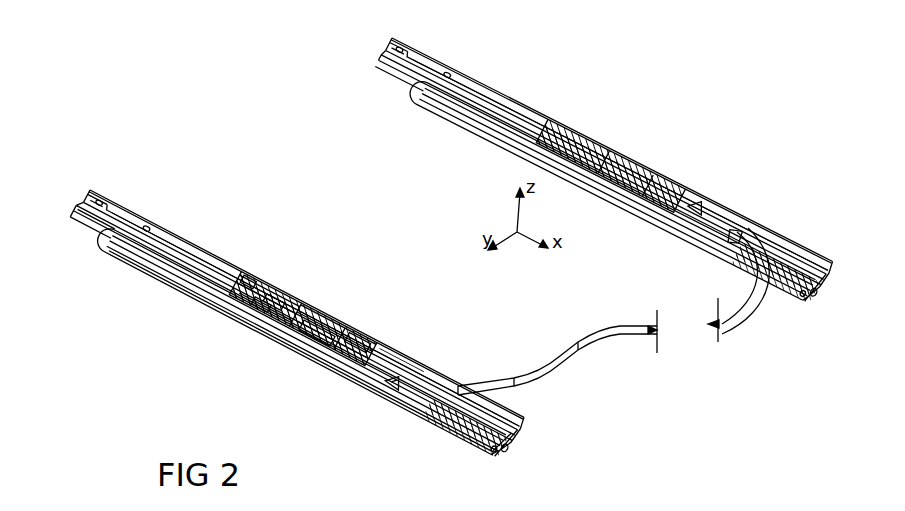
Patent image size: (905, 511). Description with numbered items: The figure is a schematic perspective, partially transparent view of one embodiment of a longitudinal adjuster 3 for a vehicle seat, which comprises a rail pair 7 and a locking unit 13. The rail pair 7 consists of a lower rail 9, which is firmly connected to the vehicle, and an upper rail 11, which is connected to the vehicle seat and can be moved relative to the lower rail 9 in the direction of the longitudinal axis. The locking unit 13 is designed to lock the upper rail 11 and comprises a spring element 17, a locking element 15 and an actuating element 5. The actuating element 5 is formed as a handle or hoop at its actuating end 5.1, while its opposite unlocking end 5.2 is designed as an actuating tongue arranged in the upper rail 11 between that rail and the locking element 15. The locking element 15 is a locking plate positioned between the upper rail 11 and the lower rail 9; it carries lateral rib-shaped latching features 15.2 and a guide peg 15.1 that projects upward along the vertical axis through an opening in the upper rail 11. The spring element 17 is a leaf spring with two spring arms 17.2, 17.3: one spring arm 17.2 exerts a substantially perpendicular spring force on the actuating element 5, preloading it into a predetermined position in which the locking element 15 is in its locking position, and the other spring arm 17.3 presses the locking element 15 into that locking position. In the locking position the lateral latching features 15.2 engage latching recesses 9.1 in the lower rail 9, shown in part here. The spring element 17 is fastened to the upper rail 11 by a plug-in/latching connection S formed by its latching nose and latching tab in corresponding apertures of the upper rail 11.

The longitudinal adjuster 3 is at (380, 188).
The actuating element 5 is at (553, 363).
The actuating end 5.1 is at (640, 343).
The unlocking end 5.2 is at (296, 284).
The rail pair 7 is at (134, 178).
The lower rail 9 is at (150, 265).
The latching recesses 9.1 is at (487, 440).
The upper rail 11 is at (107, 223).
The locking unit 13 is at (358, 322).
The locking element 15 is at (260, 280).
The guide peg 15.1 is at (262, 275).
The lateral latching features 15.2 is at (283, 300).
The spring element 17 is at (307, 287).
The spring arm 17.2 is at (330, 318).
The spring arm 17.3 is at (297, 313).
The plug-in/latching connection S is at (386, 337).